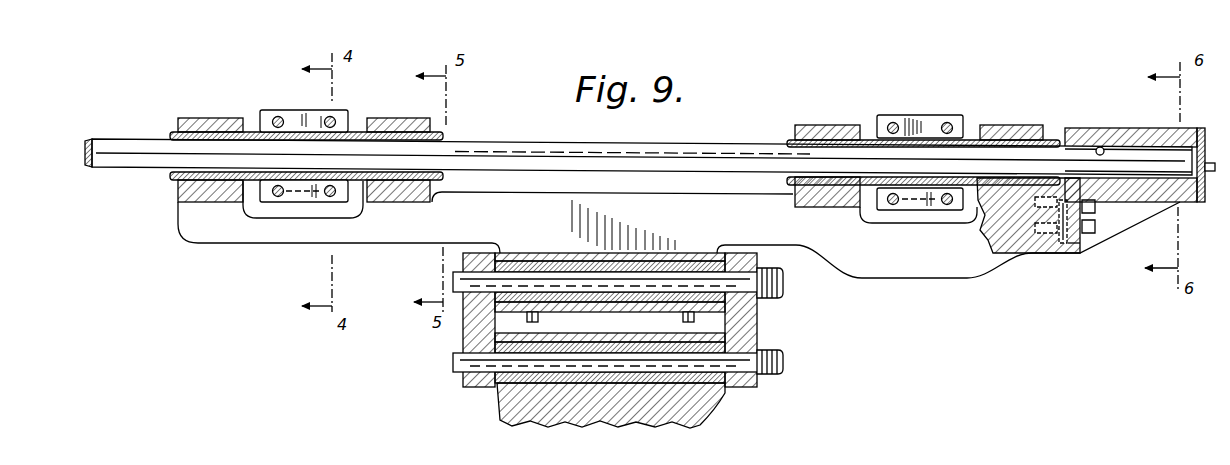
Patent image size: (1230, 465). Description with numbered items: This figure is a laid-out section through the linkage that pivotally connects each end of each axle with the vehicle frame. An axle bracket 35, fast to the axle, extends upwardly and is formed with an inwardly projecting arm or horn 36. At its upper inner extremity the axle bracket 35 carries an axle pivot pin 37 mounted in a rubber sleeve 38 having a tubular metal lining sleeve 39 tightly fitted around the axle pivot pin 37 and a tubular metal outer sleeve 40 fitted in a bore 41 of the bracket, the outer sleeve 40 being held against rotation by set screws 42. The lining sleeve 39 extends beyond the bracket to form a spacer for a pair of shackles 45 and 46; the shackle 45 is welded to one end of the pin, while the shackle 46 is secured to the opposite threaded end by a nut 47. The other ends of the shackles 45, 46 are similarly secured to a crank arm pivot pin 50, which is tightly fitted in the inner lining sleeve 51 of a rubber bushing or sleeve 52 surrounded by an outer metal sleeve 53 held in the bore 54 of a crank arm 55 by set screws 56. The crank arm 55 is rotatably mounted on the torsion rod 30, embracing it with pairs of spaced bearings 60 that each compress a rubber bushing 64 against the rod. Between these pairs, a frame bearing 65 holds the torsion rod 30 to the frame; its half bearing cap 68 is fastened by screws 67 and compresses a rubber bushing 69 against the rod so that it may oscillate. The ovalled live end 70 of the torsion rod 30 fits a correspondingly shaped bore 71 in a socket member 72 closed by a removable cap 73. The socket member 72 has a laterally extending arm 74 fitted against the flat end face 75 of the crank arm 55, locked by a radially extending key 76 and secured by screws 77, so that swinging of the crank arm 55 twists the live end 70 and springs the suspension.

The torsion rod 30 is at (680, 147).
The axle bracket 35 is at (698, 424).
The arm or horn 36 is at (680, 420).
The axle pivot pin 37 is at (630, 386).
The rubber sleeve 38 is at (512, 380).
The tubular metal lining sleeve 39 is at (522, 385).
The tubular metal outer sleeve 40 is at (536, 390).
The bore 41 is at (566, 390).
The set screws 42 is at (458, 363).
The shackle 45 is at (463, 333).
The shackle 46 is at (750, 337).
The nut 47 is at (776, 375).
The crank arm pivot pin 50 is at (786, 284).
The inner lining sleeve 51 is at (520, 256).
The rubber bushing or sleeve 52 is at (548, 264).
The outer metal sleeve 53 is at (612, 270).
The bore 54 is at (652, 268).
The crank arm 55 is at (890, 280).
The set screws 56 is at (680, 318).
The bearings 60 is at (214, 117).
The rubber bushing 64 is at (443, 138).
The bearing 65 is at (267, 108).
The screws 67 is at (279, 198).
The half bearing cap 68 is at (304, 112).
The rubber bushing 69 is at (338, 130).
The live end 70 is at (1143, 158).
The bore 71 is at (1100, 146).
The socket member 72 is at (1185, 203).
The removable cap 73 is at (1208, 150).
The laterally extending arm 74 is at (1078, 253).
The flat end face 75 is at (1063, 246).
The radially extending key 76 is at (1040, 237).
The screws 77 is at (1097, 206).